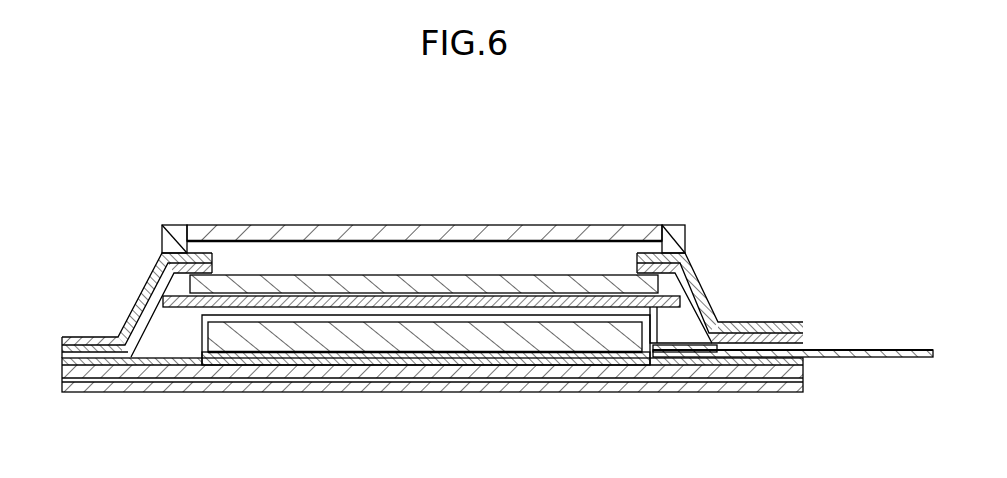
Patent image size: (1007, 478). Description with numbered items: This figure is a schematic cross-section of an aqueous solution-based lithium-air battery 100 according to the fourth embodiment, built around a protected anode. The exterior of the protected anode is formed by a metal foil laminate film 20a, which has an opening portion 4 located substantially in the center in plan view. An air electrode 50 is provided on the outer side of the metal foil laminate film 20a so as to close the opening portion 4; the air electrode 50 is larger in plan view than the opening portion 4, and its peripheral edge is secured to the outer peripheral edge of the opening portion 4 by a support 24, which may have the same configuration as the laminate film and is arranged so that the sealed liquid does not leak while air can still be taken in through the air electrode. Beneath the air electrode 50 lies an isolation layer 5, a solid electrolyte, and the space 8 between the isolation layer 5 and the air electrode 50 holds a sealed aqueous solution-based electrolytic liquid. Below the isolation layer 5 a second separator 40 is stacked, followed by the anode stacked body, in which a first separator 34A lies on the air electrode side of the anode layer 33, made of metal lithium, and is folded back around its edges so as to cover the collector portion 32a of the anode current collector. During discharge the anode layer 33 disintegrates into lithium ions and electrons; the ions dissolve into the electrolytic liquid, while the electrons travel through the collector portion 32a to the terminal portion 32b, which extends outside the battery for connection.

The aqueous solution-based lithium-air battery 100 is at (752, 177).
The support 24 is at (177, 223).
The air electrode 50 is at (375, 225).
The space 8 is at (440, 262).
The second separator 40 is at (513, 298).
The isolation layer 5 is at (547, 283).
The opening portion 4 is at (635, 267).
The metal foil laminate film 20a is at (62, 347).
The first separator 34A is at (203, 342).
The anode layer 33 is at (342, 335).
The collector portion 32a is at (653, 355).
The terminal portion 32b is at (873, 353).